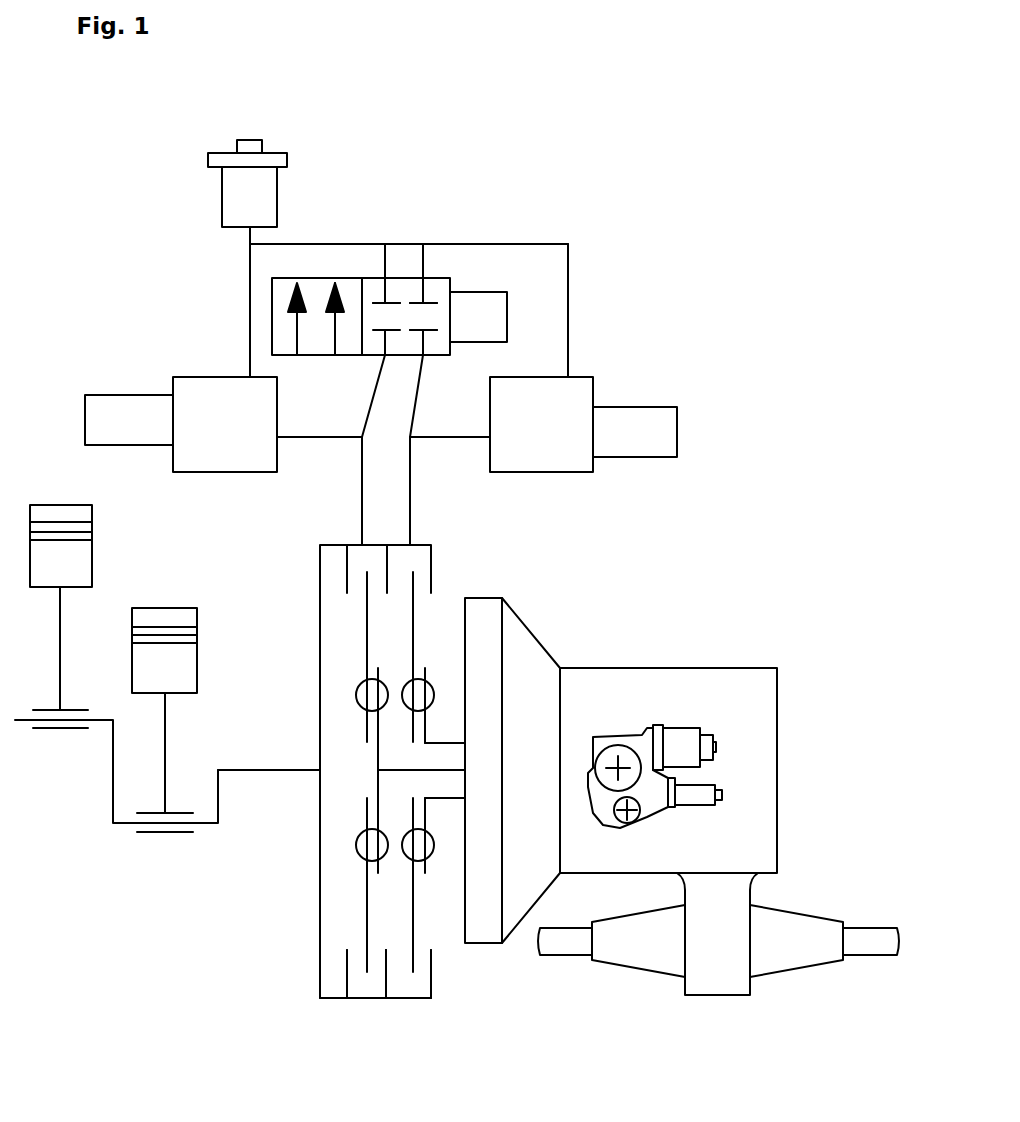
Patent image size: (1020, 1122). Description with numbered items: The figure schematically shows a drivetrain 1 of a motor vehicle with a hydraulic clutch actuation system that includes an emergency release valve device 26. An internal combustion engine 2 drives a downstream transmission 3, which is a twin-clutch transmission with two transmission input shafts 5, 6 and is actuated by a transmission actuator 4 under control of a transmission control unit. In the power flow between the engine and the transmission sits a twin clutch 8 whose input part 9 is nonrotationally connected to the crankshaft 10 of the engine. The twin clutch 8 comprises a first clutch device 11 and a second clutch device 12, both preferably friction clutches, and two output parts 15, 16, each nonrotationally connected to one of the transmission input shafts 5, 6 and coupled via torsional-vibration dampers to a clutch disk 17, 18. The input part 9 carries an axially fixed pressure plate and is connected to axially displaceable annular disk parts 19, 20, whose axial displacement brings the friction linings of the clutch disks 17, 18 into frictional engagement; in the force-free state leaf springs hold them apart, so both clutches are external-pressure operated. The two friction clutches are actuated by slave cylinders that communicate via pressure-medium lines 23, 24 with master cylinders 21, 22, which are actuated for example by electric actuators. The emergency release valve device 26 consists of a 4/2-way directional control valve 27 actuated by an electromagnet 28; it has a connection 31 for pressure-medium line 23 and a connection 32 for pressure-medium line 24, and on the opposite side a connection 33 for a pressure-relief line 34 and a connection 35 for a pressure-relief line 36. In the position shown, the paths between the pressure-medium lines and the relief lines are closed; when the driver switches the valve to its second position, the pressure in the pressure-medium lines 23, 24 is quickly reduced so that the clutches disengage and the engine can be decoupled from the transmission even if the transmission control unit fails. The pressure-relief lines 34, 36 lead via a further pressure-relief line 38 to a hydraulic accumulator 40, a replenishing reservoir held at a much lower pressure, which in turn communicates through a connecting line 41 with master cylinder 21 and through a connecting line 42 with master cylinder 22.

The drivetrain 1 is at (285, 972).
The internal combustion engine 2 is at (115, 848).
The transmission 3 is at (547, 632).
The transmission actuator 4 is at (678, 737).
The transmission input shaft 5 is at (442, 770).
The transmission input shaft 6 is at (447, 795).
The twin clutch 8 is at (388, 1015).
The input part 9 is at (310, 750).
The crankshaft 10 is at (285, 784).
The first clutch device 11 is at (314, 573).
The second clutch device 12 is at (420, 538).
The output part 15 is at (378, 785).
The output part 16 is at (427, 818).
The clutch disk 17 is at (367, 888).
The clutch disk 18 is at (415, 627).
The annular disk part 19 is at (384, 988).
The annular disk part 20 is at (432, 988).
The master cylinder 21 is at (200, 392).
The master cylinder 22 is at (537, 460).
The pressure-medium line 23 is at (362, 502).
The pressure-medium line 24 is at (412, 475).
The emergency release valve device 26 is at (423, 242).
The 4/2-way directional control valve 27 is at (338, 268).
The electromagnet 28 is at (485, 308).
The connection 31 is at (370, 364).
The connection 32 is at (428, 362).
The connection 33 is at (395, 270).
The pressure-relief line 34 is at (385, 253).
The connection 35 is at (440, 270).
The pressure-relief line 36 is at (432, 262).
The pressure-relief line 38 is at (310, 243).
The hydraulic accumulator 40 is at (212, 200).
The connecting line 41 is at (250, 281).
The connecting line 42 is at (568, 258).